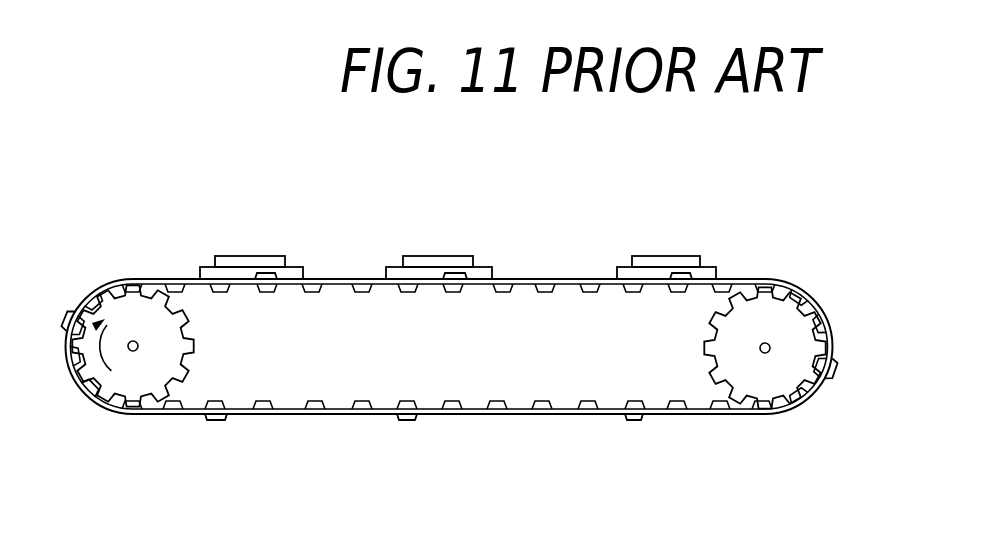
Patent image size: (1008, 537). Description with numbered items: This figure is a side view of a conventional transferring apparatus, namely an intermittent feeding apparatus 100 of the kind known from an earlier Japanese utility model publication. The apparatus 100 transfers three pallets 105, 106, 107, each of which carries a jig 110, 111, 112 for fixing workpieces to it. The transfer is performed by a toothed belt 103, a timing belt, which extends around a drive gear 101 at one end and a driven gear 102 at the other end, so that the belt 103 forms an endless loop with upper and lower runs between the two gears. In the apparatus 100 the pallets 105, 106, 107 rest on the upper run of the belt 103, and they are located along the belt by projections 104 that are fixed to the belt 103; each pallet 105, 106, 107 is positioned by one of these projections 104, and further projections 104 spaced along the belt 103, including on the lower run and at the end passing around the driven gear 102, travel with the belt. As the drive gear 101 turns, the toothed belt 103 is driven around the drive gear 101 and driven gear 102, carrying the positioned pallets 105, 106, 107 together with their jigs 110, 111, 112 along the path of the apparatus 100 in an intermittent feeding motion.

The intermittent feeding apparatus 100 is at (541, 237).
The drive gear 101 is at (118, 387).
The driven gear 102 is at (782, 398).
The toothed belt 103 is at (322, 413).
The projections 104 is at (268, 275).
The pallet 105 is at (243, 273).
The pallet 106 is at (430, 273).
The pallet 107 is at (645, 272).
The jig 110 is at (231, 258).
The jig 111 is at (419, 257).
The jig 112 is at (667, 259).